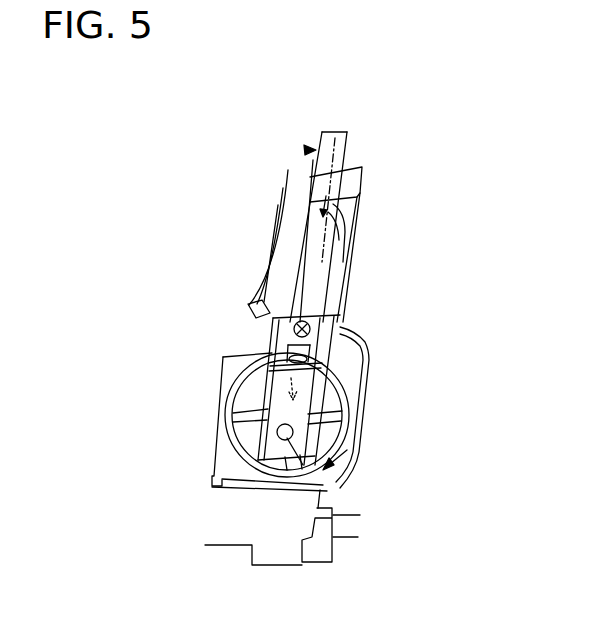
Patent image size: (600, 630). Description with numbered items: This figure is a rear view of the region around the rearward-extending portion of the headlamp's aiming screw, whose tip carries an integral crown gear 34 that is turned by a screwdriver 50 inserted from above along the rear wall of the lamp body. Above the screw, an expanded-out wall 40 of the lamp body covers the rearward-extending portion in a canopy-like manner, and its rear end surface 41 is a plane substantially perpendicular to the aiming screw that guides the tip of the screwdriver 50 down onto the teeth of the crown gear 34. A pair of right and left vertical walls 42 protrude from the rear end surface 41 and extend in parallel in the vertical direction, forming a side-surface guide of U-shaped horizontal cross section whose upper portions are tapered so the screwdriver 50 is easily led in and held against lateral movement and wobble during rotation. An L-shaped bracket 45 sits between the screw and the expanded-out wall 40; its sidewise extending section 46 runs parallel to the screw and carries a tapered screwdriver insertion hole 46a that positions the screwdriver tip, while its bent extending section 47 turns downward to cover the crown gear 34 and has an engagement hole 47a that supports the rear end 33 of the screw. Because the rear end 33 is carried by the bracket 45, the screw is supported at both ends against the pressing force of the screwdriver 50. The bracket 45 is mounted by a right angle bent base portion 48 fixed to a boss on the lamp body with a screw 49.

The rear end 33 is at (332, 488).
The crown gear 34 is at (347, 450).
The expanded-out wall 40 is at (343, 165).
The rear end surface 41 is at (362, 192).
The vertical walls 42 is at (358, 248).
The bracket 45 is at (331, 367).
The sidewise extending section 46 is at (335, 360).
The screwdriver insertion hole 46a is at (290, 349).
The bent extending section 47 is at (345, 430).
The engagement hole 47a is at (277, 430).
The right angle bent base portion 48 is at (340, 327).
The screw 49 is at (262, 326).
The screwdriver 50 is at (305, 149).